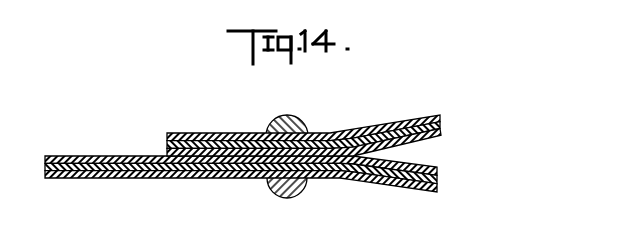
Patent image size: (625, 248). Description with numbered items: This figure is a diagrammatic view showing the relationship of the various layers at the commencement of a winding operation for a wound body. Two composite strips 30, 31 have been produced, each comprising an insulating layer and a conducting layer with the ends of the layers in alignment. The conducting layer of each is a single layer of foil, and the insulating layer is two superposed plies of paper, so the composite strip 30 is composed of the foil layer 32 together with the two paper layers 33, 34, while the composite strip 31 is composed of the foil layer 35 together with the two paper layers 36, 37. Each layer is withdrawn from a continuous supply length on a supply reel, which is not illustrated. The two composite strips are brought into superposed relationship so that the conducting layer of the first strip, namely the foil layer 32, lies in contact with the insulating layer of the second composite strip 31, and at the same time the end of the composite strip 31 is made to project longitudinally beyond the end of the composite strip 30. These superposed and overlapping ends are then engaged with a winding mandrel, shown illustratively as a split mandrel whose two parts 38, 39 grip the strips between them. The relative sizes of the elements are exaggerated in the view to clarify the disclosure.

The composite strip 30 is at (327, 121).
The composite strip 31 is at (266, 189).
The foil layer 32 is at (373, 146).
The paper layer 33 is at (397, 134).
The paper layer 34 is at (432, 119).
The foil layer 35 is at (361, 161).
The paper layer 36 is at (386, 172).
The paper layer 37 is at (419, 185).
The part of split mandrel 38 is at (273, 197).
The part of split mandrel 39 is at (272, 122).